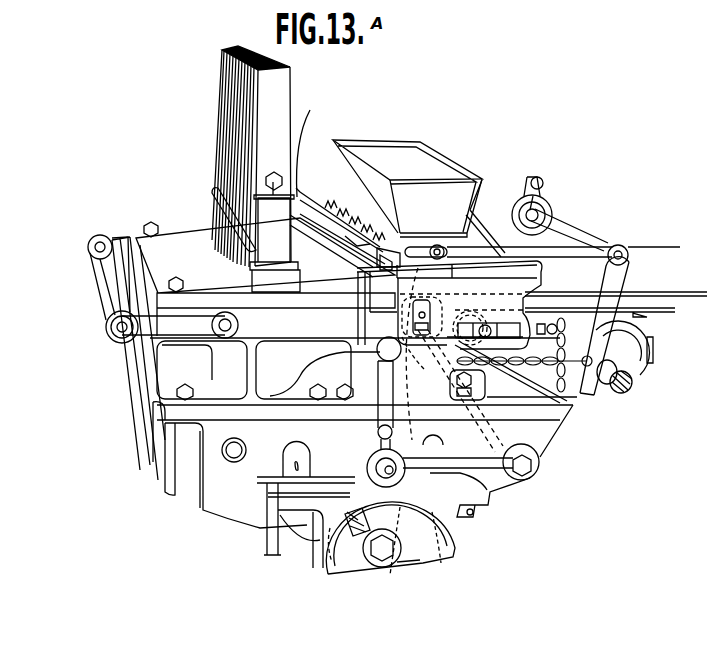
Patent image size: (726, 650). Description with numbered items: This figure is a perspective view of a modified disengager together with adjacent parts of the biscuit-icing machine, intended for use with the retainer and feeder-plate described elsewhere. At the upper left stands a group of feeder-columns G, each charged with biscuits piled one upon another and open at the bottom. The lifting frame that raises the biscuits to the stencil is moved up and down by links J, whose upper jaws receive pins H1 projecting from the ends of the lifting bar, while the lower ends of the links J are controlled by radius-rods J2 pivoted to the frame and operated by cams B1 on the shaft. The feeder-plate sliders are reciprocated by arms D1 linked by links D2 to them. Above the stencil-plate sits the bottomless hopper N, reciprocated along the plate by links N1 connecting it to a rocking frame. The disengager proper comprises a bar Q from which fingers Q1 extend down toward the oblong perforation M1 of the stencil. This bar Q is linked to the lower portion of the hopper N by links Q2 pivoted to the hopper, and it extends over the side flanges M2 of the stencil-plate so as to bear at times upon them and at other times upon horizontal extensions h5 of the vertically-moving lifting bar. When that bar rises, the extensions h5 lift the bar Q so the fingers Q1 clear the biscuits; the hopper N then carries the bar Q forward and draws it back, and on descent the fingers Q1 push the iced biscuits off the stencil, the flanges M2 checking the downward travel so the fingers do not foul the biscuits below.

The feeder-columns G is at (242, 90).
The horizontal extensions h5 is at (400, 233).
The bar Q is at (334, 198).
The fingers Q1 is at (382, 250).
The hopper N is at (407, 188).
The links Q2 is at (384, 256).
The side flanges M2 is at (483, 210).
The links N1 is at (492, 212).
The links D2 is at (127, 250).
The arms D1 is at (132, 397).
The perforation M1 is at (270, 253).
The pins H1 is at (340, 350).
The links J is at (388, 392).
The cams B1 is at (442, 510).
The radius-rods J2 is at (497, 487).